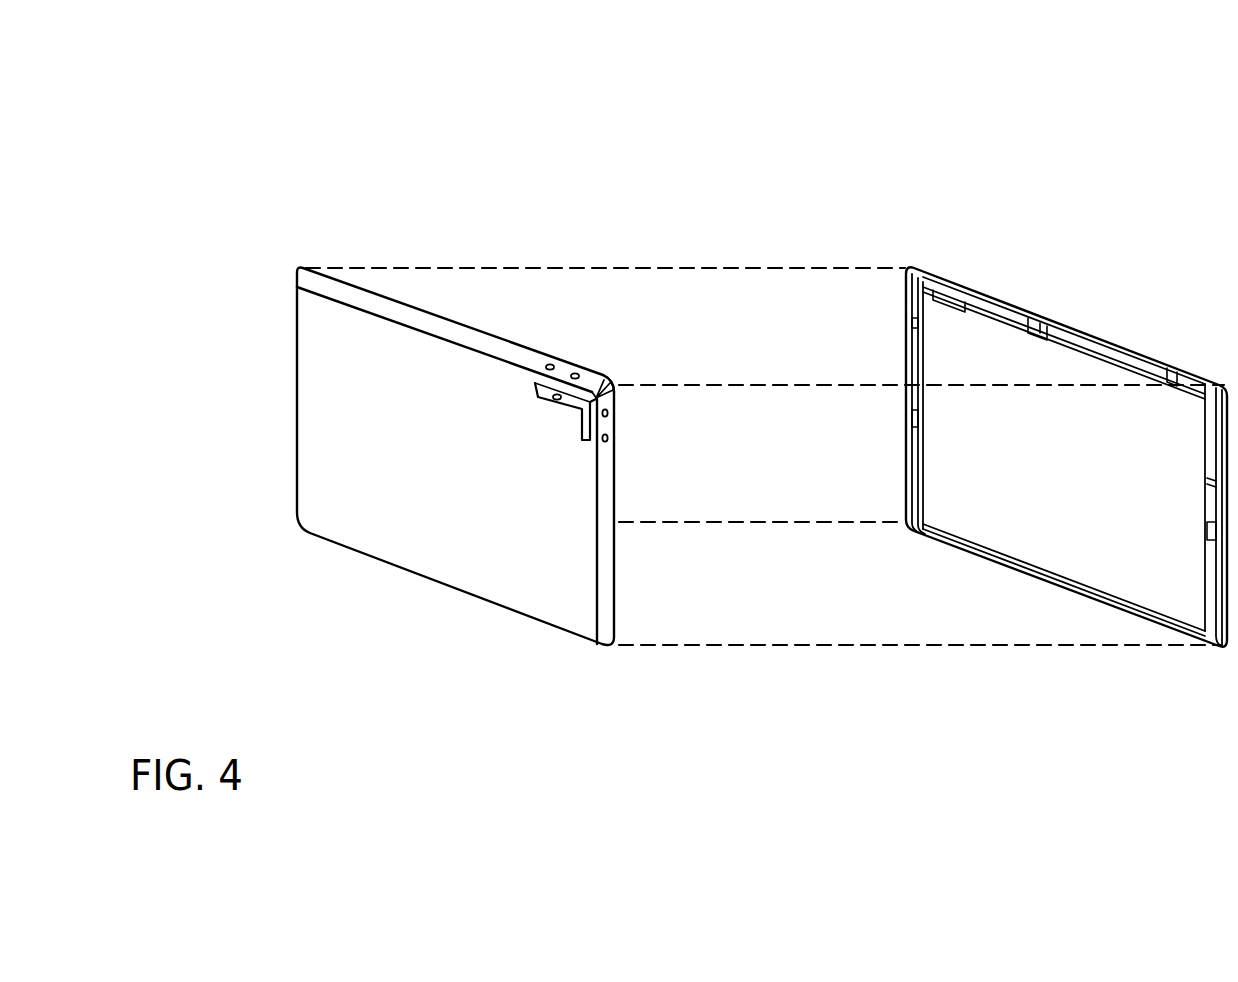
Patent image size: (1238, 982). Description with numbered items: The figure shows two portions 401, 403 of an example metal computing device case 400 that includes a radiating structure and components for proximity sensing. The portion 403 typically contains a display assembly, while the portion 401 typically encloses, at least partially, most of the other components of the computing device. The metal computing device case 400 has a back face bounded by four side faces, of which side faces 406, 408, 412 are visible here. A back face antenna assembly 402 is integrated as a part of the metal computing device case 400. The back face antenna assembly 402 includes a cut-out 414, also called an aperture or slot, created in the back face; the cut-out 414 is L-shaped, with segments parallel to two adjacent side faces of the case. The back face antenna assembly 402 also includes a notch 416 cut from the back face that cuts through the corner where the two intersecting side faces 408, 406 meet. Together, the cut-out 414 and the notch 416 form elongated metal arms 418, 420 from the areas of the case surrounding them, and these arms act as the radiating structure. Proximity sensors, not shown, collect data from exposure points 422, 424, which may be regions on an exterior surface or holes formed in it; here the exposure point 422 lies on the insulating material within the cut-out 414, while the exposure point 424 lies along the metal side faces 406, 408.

The metal computing device case 400 is at (237, 100).
The portion 401 is at (297, 268).
The back face antenna assembly 402 is at (636, 340).
The portion 403 is at (1107, 335).
The side face 406 is at (440, 330).
The side face 408 is at (602, 612).
The side face 412 is at (418, 573).
The cut-out 414 is at (574, 404).
The notch 416 is at (619, 389).
The elongated metal arm 418 is at (569, 387).
The elongated metal arm 420 is at (596, 425).
The exposure point 422 is at (553, 397).
The exposure point 424 is at (550, 362).